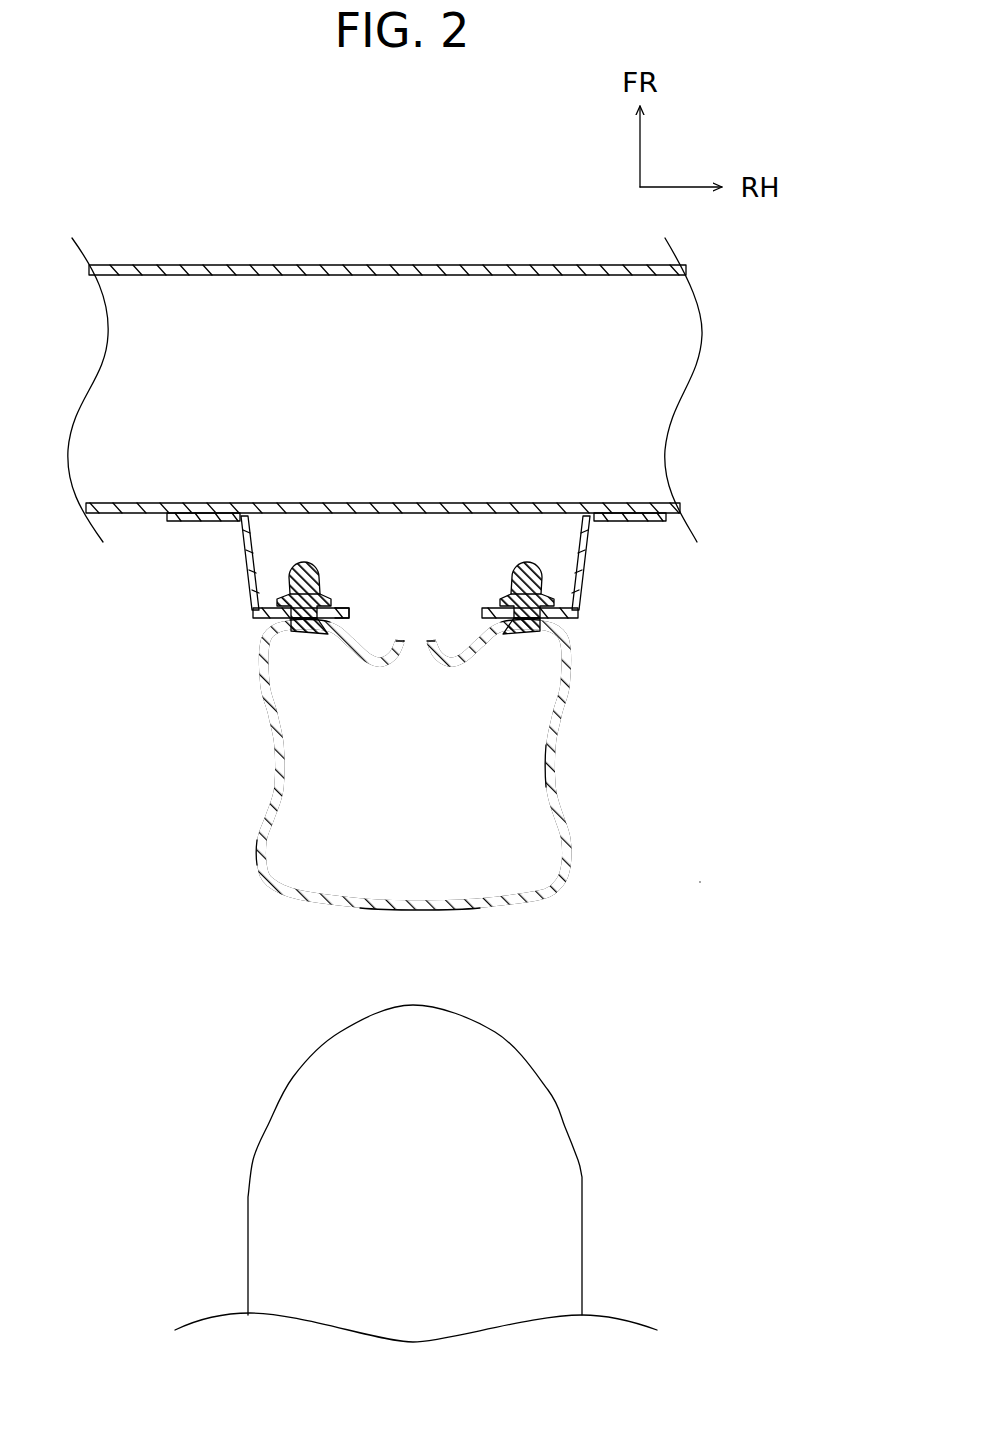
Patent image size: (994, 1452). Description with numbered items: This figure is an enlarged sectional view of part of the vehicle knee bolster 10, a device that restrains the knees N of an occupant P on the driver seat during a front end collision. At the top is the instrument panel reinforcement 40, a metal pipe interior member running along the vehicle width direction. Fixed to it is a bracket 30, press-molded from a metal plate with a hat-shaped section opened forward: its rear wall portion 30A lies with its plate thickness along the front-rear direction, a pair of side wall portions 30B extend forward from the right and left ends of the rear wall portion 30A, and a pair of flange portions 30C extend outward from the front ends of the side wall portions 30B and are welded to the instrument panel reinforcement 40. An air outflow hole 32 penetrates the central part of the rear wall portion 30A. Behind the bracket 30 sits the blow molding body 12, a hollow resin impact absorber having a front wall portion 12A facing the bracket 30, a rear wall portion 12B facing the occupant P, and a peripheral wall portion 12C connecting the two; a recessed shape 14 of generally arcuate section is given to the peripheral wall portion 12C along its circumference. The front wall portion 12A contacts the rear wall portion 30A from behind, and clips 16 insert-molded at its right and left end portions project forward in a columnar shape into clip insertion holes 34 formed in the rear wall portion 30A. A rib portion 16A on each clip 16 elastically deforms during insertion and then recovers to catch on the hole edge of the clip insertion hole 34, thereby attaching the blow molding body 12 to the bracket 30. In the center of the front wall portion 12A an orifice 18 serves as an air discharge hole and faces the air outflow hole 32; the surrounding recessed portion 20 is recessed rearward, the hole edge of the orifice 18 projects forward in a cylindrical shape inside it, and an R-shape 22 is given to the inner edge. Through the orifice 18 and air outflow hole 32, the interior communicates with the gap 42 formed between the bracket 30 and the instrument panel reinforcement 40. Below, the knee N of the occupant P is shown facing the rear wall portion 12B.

The vehicle knee bolster 10 is at (699, 882).
The blow molding body 12 is at (395, 773).
The front wall portion 12A is at (340, 645).
The rear wall portion 12B is at (422, 907).
The peripheral wall portion 12C is at (257, 825).
The recessed shape 14 is at (551, 752).
The clip 16 is at (414, 537).
The rib portion 16A is at (290, 575).
The orifice 18 is at (410, 643).
The recessed portion 20 is at (465, 642).
The R-shape 22 is at (430, 648).
The bracket 30 is at (416, 553).
The rear wall portion 30A is at (273, 618).
The side wall portion 30B is at (255, 560).
The flange portion 30C is at (207, 521).
The air outflow hole 32 is at (352, 614).
The clip insertion hole 34 is at (290, 625).
The instrument panel reinforcement 40 is at (410, 265).
The gap 42 is at (420, 540).
The knee N is at (557, 1105).
The occupant P is at (585, 1228).